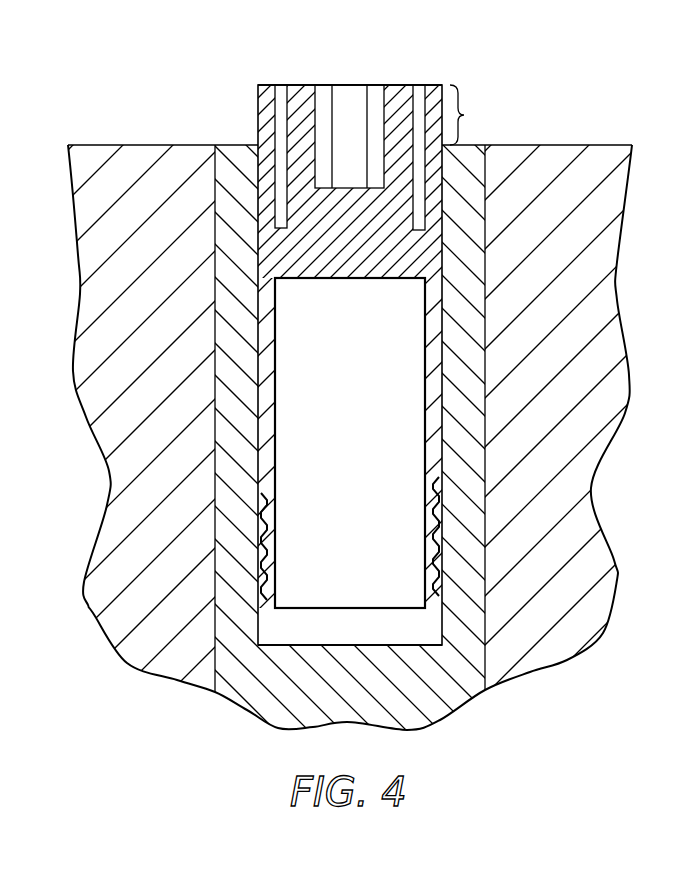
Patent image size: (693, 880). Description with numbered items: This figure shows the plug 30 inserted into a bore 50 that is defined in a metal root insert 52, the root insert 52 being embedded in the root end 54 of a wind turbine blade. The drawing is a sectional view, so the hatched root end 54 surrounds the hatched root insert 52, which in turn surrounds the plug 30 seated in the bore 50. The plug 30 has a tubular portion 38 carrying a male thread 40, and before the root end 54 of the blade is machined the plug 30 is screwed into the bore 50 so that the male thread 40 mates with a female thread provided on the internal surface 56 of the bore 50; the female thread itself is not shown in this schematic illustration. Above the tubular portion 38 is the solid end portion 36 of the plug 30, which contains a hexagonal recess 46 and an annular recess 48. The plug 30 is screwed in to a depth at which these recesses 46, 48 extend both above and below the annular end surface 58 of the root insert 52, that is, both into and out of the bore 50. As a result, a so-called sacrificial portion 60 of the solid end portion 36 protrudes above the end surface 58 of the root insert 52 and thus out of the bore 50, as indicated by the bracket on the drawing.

The plug 30 is at (421, 60).
The solid end portion 36 is at (263, 102).
The tubular portion 38 is at (429, 364).
The male thread 40 is at (258, 512).
The hexagonal recess 46 is at (352, 97).
The annular recess 48 is at (278, 93).
The bore 50 is at (313, 631).
The metal root insert 52 is at (456, 426).
The root end 54 is at (564, 152).
The internal surface 56 is at (440, 630).
The annular end surface 58 is at (221, 145).
The sacrificial portion 60 is at (376, 115).